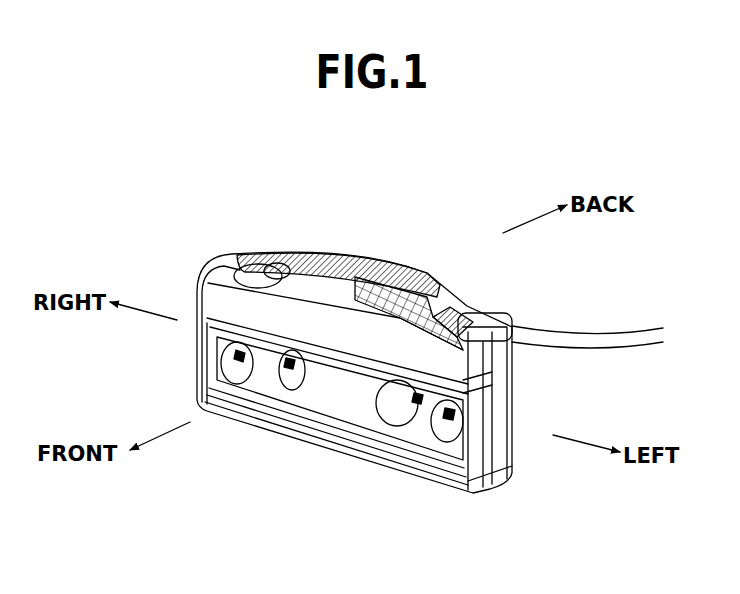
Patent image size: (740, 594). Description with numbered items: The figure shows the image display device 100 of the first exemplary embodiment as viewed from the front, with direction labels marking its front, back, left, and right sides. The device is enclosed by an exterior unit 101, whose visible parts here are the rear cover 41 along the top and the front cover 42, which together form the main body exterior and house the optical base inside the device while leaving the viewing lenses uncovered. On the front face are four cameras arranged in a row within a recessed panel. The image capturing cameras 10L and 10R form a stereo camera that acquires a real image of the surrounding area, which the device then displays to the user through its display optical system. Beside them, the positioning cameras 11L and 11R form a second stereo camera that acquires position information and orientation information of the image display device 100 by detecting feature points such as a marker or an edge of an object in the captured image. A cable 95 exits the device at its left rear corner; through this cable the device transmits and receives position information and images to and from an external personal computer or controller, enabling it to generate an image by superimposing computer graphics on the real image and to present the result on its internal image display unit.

The image display device 100 is at (297, 557).
The exterior unit 101 is at (208, 260).
The rear cover 41 is at (381, 257).
The front cover 42 is at (297, 280).
The cable 95 is at (490, 317).
The image capturing camera 10R is at (291, 368).
The positioning camera 11R is at (238, 360).
The image capturing camera 10L is at (416, 404).
The positioning camera 11L is at (452, 420).